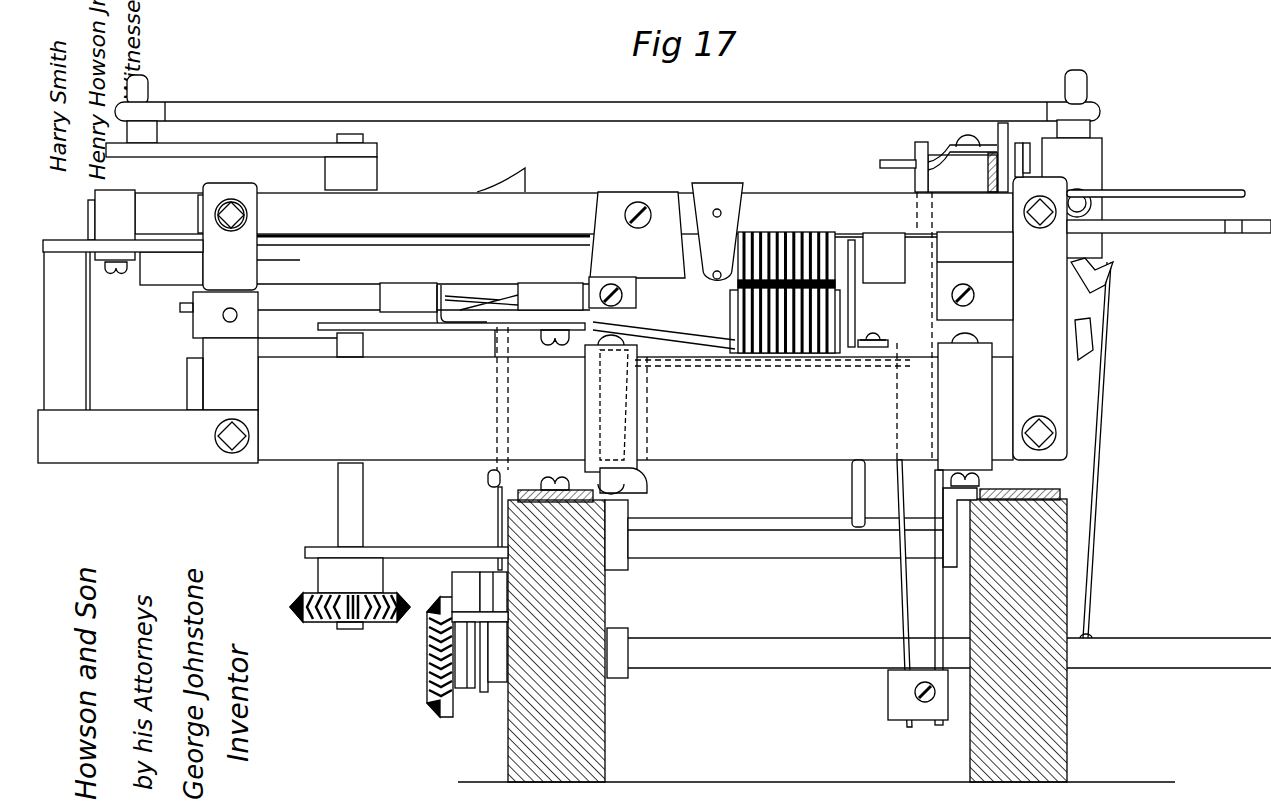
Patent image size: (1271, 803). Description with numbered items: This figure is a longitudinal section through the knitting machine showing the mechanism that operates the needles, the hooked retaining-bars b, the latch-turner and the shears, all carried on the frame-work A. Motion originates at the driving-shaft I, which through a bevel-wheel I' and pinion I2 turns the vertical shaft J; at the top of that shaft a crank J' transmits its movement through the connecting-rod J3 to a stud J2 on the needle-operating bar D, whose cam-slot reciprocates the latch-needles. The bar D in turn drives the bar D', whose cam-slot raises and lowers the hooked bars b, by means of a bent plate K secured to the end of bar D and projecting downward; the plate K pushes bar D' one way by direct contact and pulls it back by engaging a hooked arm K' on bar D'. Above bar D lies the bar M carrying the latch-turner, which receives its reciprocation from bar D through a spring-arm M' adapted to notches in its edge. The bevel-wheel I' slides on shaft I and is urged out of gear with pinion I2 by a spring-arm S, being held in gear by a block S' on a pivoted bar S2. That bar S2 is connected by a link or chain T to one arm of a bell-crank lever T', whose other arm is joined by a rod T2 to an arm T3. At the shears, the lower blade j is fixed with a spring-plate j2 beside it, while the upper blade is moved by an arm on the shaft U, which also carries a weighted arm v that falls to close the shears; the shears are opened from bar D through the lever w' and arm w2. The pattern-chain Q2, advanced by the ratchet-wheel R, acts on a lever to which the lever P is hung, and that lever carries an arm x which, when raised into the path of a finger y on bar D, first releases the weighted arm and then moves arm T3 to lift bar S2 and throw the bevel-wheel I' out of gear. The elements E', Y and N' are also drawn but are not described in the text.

The connecting-rod J3 is at (607, 98).
The stud J2 is at (1075, 87).
The crank J' is at (241, 155).
The vertical shaft J is at (350, 505).
The needle-operating bar D is at (574, 251).
The bar D' is at (635, 396).
The bent plate K is at (123, 300).
The hooked arm K' is at (148, 436).
The pinion I2 is at (399, 598).
The driving-shaft I is at (837, 657).
The block S' is at (466, 592).
The pivoted bar S2 is at (493, 592).
The spring-arm S is at (480, 652).
The frame-work A is at (816, 635).
The shaft U is at (786, 538).
The weighted arm v is at (850, 493).
The link or chain T is at (491, 448).
The bell-crank lever T' is at (567, 414).
The rod T2 is at (772, 408).
The arm T3 is at (947, 310).
The lever w' is at (526, 320).
The arm w2 is at (481, 296).
The bracket E' is at (666, 245).
The finger y is at (509, 178).
The arm x is at (887, 164).
The post Y is at (912, 162).
The lever P is at (1008, 155).
The plate N' is at (1029, 160).
The spring-arm M' is at (1156, 181).
The bar M is at (1169, 215).
The bevel-wheel I' is at (884, 258).
The lower blade j is at (844, 293).
The spring-plate j2 is at (873, 328).
The hooked bars b is at (785, 292).
The ratchet-wheel R is at (1101, 277).
The pattern-chain Q2 is at (1100, 342).